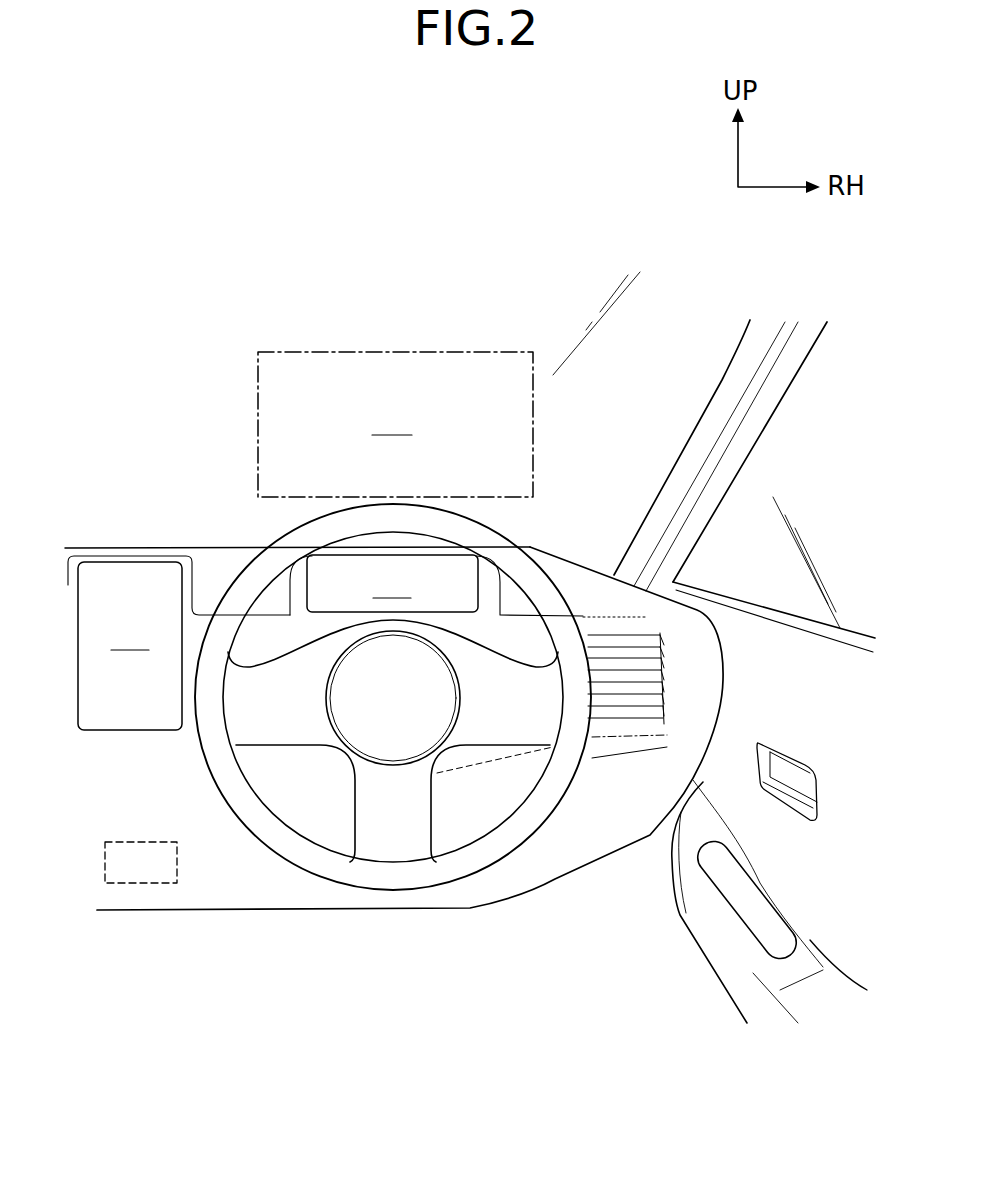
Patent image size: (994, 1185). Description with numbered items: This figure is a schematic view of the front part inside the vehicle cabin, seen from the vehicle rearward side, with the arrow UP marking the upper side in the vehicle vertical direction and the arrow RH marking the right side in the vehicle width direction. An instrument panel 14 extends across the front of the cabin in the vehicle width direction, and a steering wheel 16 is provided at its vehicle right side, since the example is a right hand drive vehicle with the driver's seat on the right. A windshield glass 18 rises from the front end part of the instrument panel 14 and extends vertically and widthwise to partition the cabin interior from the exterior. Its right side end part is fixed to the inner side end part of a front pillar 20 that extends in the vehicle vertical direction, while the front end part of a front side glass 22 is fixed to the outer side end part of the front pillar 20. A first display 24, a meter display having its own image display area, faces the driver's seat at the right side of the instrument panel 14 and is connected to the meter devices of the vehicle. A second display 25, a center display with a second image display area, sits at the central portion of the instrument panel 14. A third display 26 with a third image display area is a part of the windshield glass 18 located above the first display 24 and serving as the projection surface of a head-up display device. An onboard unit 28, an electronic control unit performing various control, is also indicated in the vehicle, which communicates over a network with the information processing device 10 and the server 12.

The information processing device 10 is at (288, 310).
The server 12 is at (328, 233).
The instrument panel 14 is at (590, 867).
The steering wheel 16 is at (570, 588).
The windshield glass 18 is at (652, 422).
The front pillar 20 is at (731, 355).
The front side glass 22 is at (853, 585).
The first display 24 is at (347, 587).
The second display 25 is at (142, 712).
The third display 26 is at (373, 352).
The onboard unit 28 is at (153, 883).